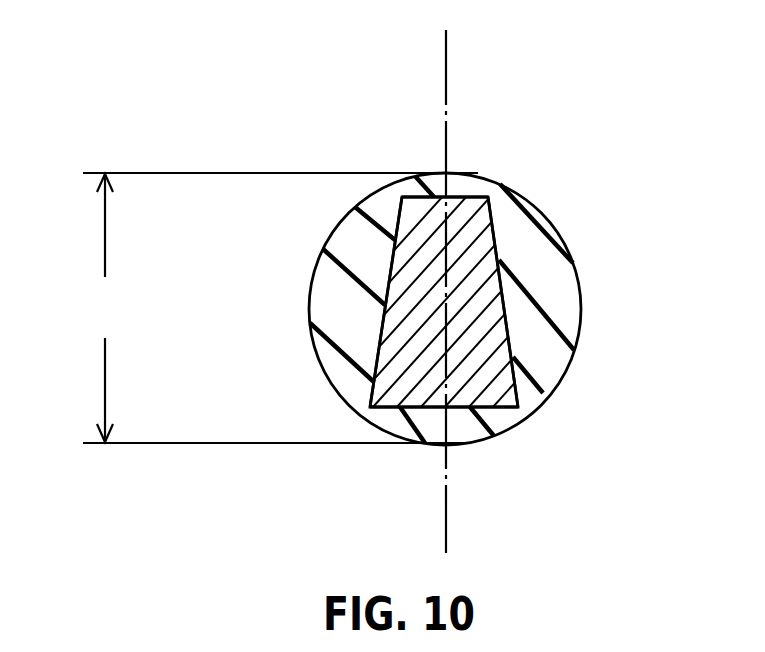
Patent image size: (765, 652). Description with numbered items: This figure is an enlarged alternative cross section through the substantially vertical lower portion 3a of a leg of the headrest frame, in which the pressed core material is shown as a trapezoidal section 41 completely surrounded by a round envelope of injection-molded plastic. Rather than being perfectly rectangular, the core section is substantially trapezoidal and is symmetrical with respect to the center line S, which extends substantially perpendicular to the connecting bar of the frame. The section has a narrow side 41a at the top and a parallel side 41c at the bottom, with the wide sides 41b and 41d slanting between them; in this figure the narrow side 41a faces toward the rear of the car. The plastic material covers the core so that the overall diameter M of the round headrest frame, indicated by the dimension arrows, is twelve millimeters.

The substantially vertical lower portion 3a is at (533, 413).
The permanent magnet (trapezoidal cross section) 41 is at (493, 219).
The narrow side 41a is at (467, 196).
The wide side 41b is at (507, 318).
The bottom (inner) face of magnet 41c is at (464, 408).
The wide side 41d is at (386, 301).
The center line S is at (448, 62).
The diameter of the headrest frame M is at (280, 308).